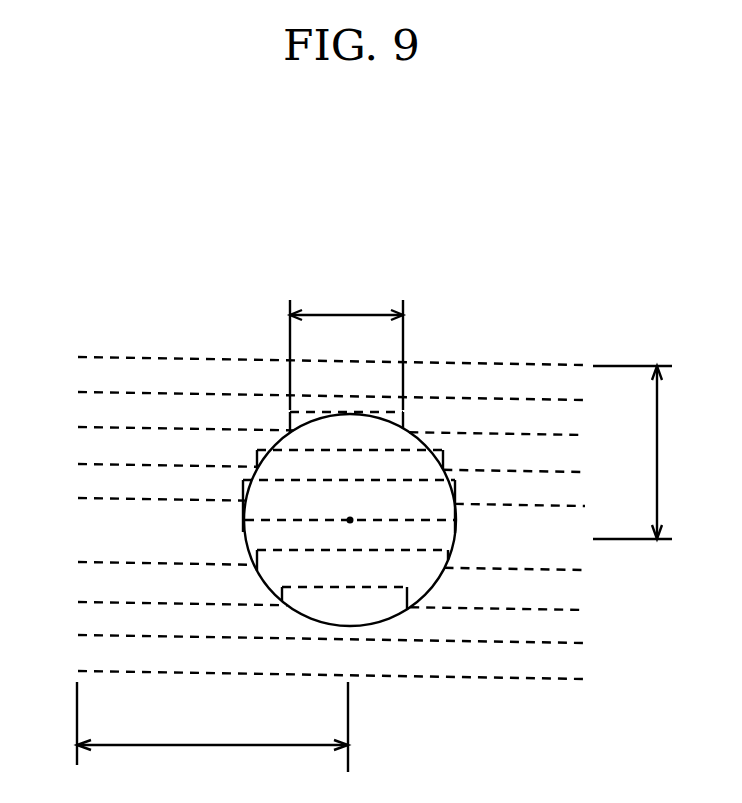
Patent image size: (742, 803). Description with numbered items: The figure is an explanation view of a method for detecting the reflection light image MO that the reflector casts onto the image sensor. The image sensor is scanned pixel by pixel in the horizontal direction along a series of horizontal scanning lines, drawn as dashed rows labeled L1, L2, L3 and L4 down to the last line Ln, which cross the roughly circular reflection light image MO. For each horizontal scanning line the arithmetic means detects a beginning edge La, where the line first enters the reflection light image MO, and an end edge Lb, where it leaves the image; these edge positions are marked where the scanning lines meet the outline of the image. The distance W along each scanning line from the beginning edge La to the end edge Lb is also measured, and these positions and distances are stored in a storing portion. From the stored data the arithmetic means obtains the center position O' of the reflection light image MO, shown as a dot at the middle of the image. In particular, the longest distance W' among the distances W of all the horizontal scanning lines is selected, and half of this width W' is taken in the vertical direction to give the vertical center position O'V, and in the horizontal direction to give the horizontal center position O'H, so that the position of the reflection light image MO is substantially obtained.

The horizontal scanning line L1 is at (306, 355).
The horizontal scanning line L2 is at (306, 388).
The horizontal scanning line L3 is at (306, 423).
The horizontal scanning line L4 is at (306, 461).
The horizontal scanning line Ln is at (306, 665).
The beginning edge La is at (255, 467).
The end edge Lb is at (405, 430).
The distance from beginning edge to end edge W is at (346, 341).
The longest distance W' is at (392, 625).
The reflection light image MO is at (458, 503).
The center position O' is at (372, 621).
The center position in the vertical direction O'V is at (651, 452).
The center position in the horizontal direction O'H is at (212, 736).